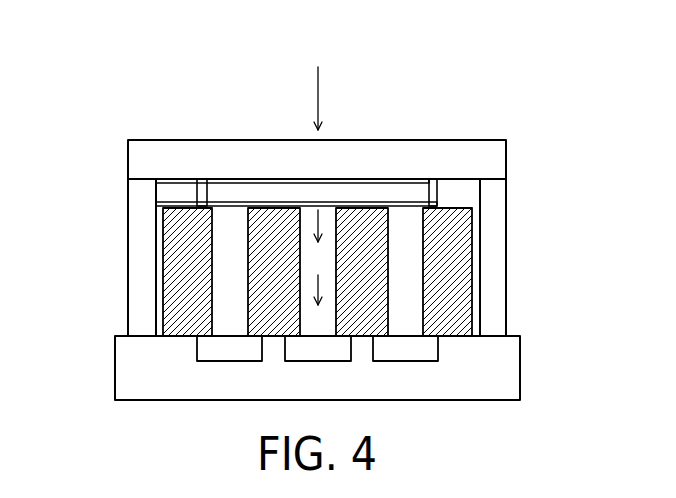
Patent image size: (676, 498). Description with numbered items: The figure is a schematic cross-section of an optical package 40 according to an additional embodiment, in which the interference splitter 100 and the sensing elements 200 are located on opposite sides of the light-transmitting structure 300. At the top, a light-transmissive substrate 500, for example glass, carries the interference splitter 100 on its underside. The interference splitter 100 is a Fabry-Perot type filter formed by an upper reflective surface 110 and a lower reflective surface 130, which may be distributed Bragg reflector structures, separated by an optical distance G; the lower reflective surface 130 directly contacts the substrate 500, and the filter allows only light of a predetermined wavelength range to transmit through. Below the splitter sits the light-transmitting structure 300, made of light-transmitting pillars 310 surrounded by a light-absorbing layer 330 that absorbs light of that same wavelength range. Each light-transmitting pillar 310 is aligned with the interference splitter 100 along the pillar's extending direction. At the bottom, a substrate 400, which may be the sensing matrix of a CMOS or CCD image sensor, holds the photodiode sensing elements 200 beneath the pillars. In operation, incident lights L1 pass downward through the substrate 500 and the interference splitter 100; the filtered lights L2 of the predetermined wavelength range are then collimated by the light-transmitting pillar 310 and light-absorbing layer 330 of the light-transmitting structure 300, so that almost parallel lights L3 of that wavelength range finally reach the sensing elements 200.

The image sensor package / device 40 is at (89, 34).
The substrate 500 is at (507, 157).
The interference splitter 100 is at (313, 193).
The lower reflective surface 130 is at (197, 182).
The optical distance G is at (210, 193).
The upper reflective surface 110 is at (197, 203).
The light-transmitting structure 300 is at (393, 272).
The light-absorbing layer 330 is at (474, 262).
The light-transmitting pillar 310 is at (439, 271).
The substrate 400 is at (115, 363).
The sensing element 200 is at (230, 361).
The incident light L1 is at (321, 97).
The lights having a predetermined wavelength range L2 is at (317, 238).
The almost parallel lights L3 is at (317, 303).